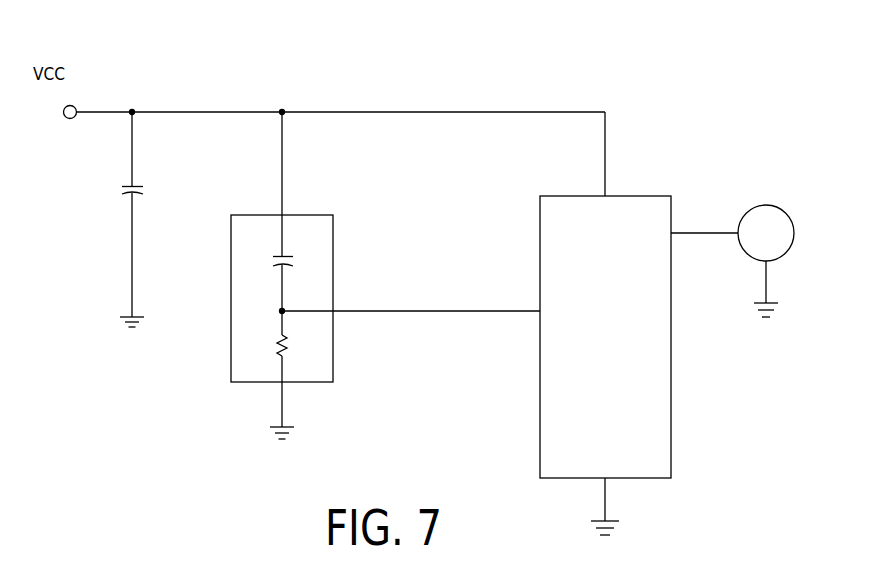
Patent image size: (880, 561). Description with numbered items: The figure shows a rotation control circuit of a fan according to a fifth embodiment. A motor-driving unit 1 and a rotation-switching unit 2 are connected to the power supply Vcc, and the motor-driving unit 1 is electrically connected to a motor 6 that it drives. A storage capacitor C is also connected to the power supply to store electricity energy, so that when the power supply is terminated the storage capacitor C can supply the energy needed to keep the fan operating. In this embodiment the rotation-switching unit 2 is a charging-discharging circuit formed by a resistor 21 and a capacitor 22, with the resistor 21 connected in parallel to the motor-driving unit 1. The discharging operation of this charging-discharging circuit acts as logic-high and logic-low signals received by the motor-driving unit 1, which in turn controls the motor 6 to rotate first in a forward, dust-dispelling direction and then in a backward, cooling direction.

The motor-driving unit 1 is at (547, 443).
The rotation-switching unit 2 is at (281, 275).
The resistor 21 is at (280, 339).
The capacitor 22 is at (278, 253).
The motor 6 is at (748, 212).
The storage capacitor C is at (123, 219).